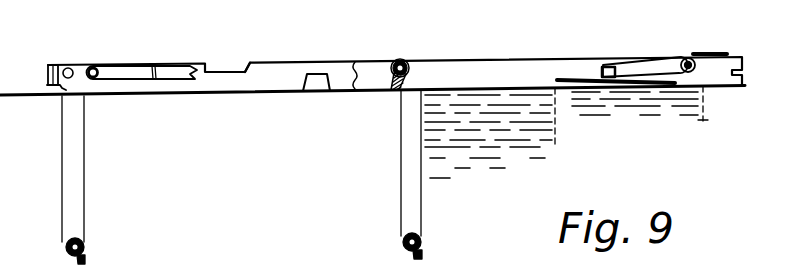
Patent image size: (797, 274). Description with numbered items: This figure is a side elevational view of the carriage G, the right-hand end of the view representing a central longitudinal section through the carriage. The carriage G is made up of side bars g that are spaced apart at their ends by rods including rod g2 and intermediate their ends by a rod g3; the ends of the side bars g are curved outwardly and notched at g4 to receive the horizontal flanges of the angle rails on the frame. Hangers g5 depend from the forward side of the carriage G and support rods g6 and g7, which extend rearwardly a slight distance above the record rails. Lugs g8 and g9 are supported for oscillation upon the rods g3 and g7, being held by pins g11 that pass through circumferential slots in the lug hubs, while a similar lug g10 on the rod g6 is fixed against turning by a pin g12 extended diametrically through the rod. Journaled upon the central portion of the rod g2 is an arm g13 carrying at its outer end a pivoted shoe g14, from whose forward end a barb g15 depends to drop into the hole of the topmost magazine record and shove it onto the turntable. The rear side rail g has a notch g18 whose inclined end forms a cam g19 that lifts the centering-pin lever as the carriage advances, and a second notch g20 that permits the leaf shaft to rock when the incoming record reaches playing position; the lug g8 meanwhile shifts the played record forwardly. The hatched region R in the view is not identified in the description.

The carriage G is at (556, 56).
The side bar g is at (328, 67).
The sectioned support R is at (503, 84).
The rod g2 is at (688, 58).
The rod g3 is at (400, 61).
The notch g4 is at (63, 63).
The hanger g5 is at (80, 149).
The rod g6 is at (83, 242).
The rod g7 is at (420, 238).
The lug g8 is at (395, 86).
The lug g9 is at (421, 255).
The lug g10 is at (85, 262).
The pin g11 is at (407, 66).
The pin g12 is at (68, 245).
The arm g13 is at (650, 62).
The shoe g14 is at (587, 79).
The barb g15 is at (568, 88).
The notch g18 is at (217, 70).
The cam g19 is at (247, 92).
The notch g20 is at (321, 84).